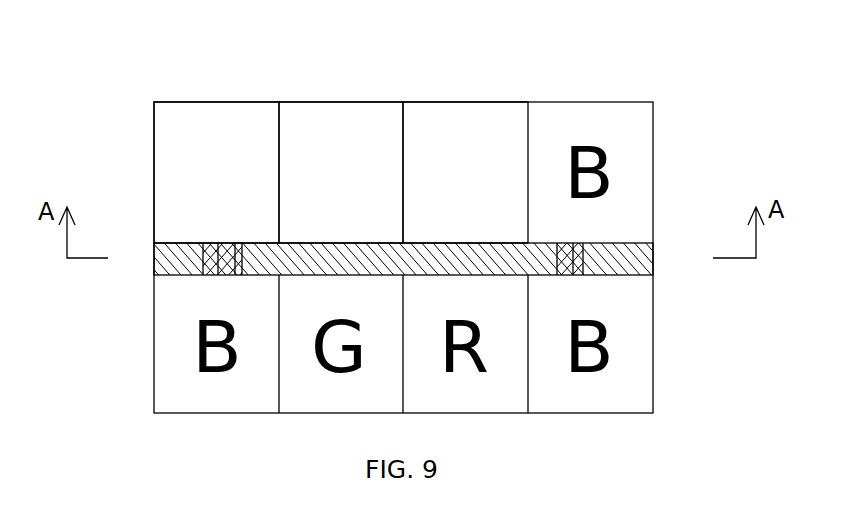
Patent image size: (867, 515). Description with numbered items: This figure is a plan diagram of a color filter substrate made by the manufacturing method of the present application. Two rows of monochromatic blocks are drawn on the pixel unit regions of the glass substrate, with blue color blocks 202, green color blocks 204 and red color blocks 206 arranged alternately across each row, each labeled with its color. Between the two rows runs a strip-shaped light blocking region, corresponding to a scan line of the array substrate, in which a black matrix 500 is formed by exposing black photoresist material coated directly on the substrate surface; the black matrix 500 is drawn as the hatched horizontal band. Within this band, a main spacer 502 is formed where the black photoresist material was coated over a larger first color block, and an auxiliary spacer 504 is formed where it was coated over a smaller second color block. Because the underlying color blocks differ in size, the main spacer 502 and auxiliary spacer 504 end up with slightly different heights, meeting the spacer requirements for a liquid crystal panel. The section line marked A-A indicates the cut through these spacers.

The blue color blocks 202 is at (227, 120).
The green color blocks 204 is at (362, 120).
The red color blocks 206 is at (484, 120).
The black matrix 500 is at (556, 243).
The main spacer 502 is at (207, 265).
The auxiliary spacer 504 is at (590, 275).